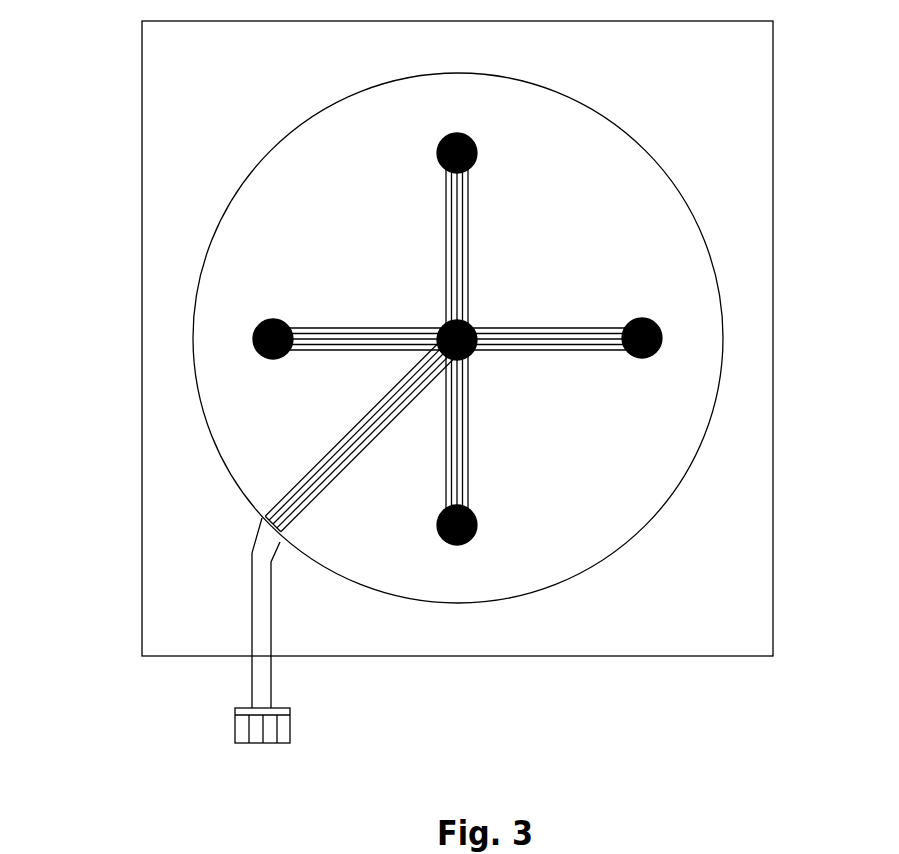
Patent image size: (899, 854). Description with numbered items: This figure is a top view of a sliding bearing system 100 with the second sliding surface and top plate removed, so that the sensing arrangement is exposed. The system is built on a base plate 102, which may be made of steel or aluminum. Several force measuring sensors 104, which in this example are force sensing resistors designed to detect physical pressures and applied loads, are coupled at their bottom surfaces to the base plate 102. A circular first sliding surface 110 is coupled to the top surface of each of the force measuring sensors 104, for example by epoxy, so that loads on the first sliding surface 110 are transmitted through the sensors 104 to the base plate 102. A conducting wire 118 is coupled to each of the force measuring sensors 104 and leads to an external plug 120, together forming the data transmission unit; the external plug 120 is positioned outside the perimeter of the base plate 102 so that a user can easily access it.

The sliding bearing system 100 is at (834, 117).
The base plate 102 is at (182, 671).
The force measuring sensors 104 is at (460, 561).
The first sliding surface 110 is at (623, 561).
The conducting wire 118 is at (373, 466).
The external plug 120 is at (306, 721).